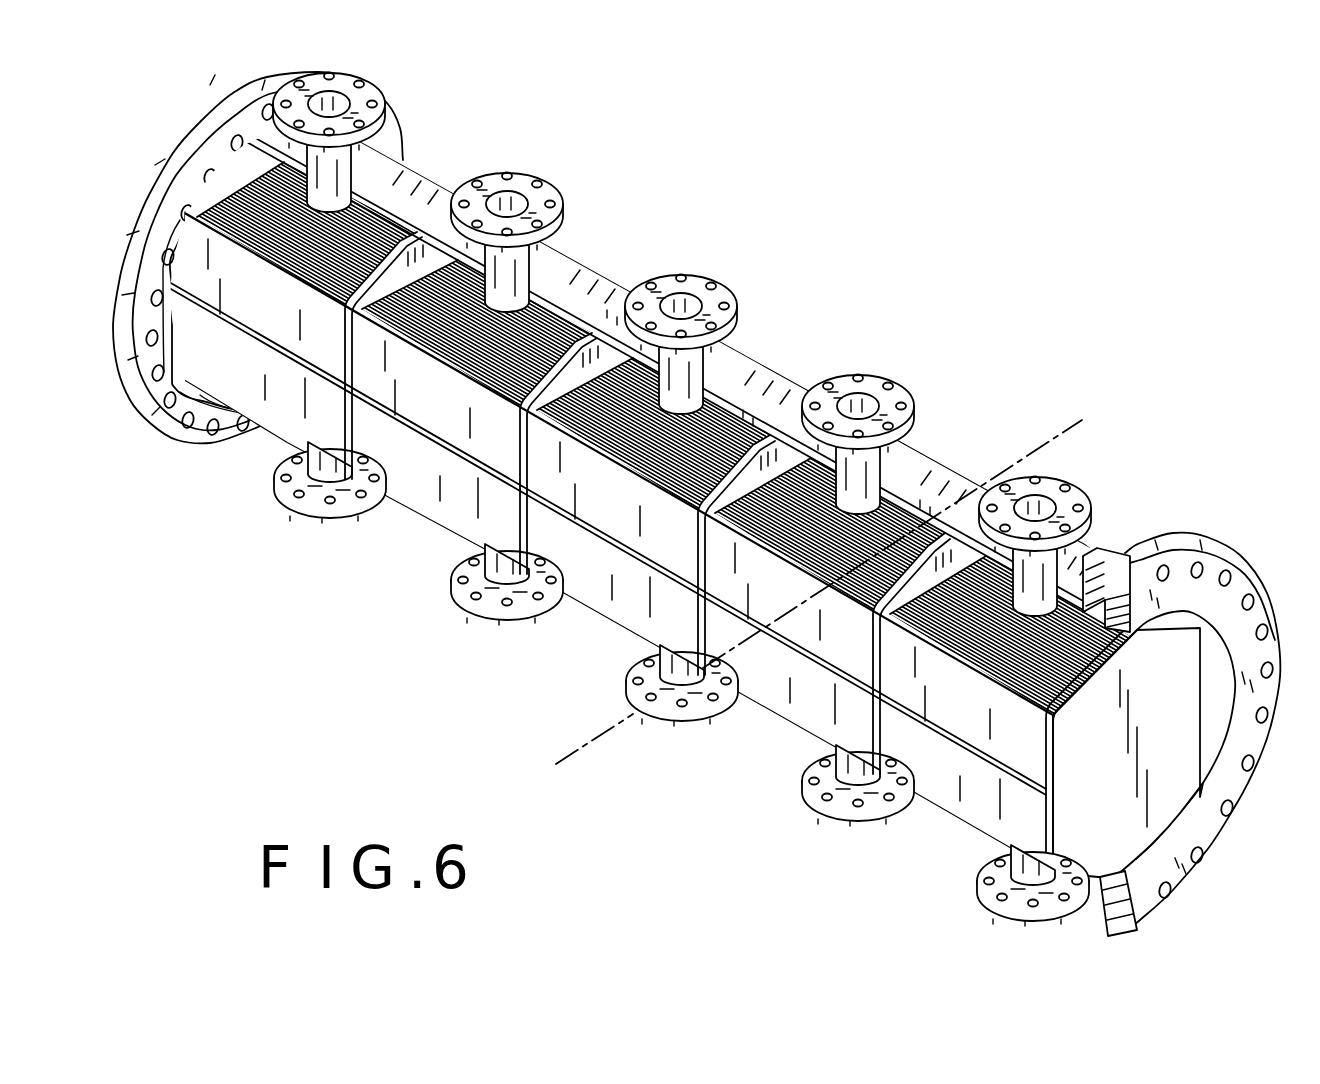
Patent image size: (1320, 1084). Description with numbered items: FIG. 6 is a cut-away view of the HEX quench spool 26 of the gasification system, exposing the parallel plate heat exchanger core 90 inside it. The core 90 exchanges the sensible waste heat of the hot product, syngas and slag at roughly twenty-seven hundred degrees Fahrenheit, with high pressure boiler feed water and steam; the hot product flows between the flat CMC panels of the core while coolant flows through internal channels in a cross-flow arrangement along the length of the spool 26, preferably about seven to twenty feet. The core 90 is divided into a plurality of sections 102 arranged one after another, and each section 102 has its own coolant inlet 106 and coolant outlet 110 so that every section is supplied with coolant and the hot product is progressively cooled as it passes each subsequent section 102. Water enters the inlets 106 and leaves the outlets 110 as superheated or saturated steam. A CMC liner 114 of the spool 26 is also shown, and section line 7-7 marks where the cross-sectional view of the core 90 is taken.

The section line 7 is at (818, 591).
The HEX quench spool 26 is at (763, 383).
The parallel plate heat exchanger core 90 is at (602, 578).
The section 102 is at (283, 406).
The coolant inlet 106 is at (340, 104).
The coolant outlet 110 is at (316, 520).
The CMC liner 114 is at (1233, 667).